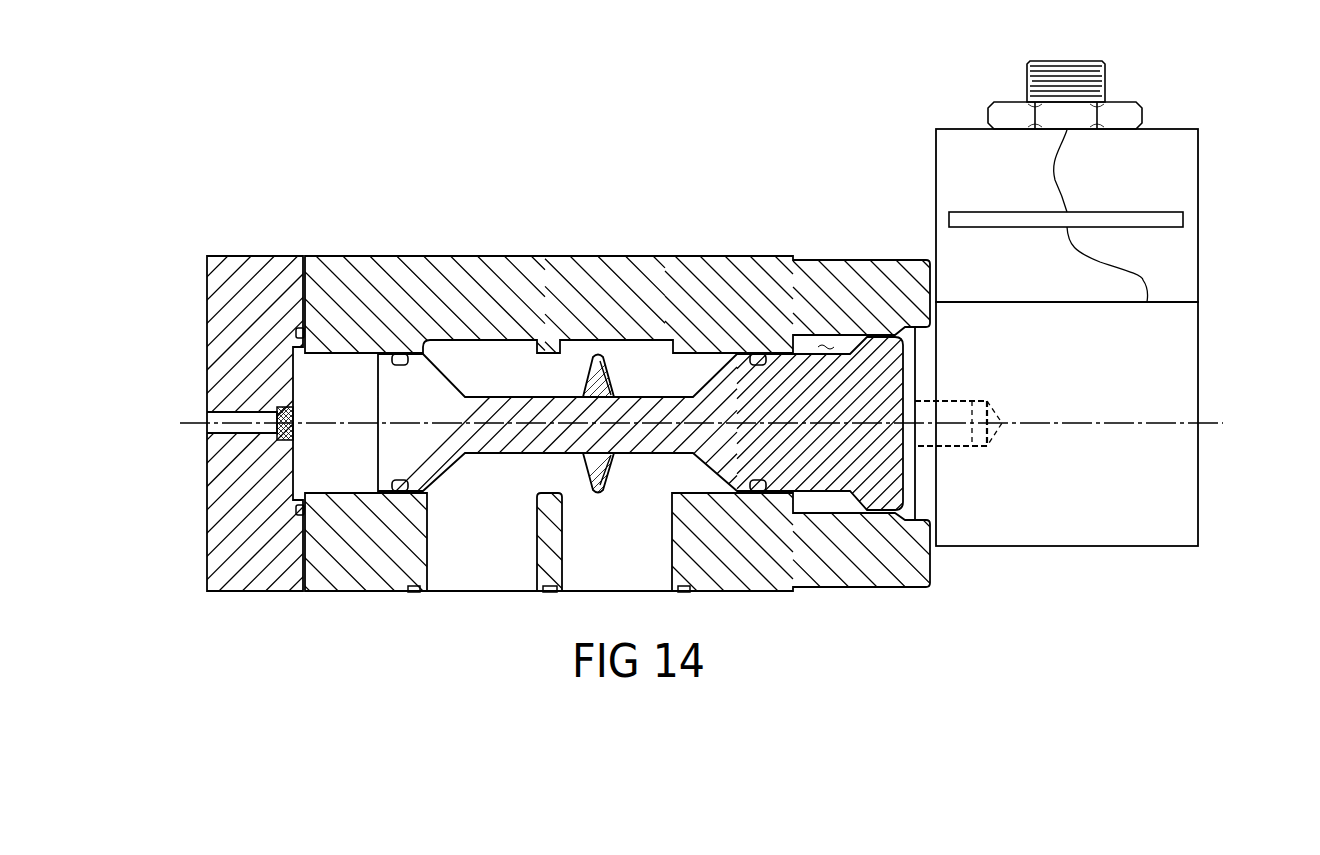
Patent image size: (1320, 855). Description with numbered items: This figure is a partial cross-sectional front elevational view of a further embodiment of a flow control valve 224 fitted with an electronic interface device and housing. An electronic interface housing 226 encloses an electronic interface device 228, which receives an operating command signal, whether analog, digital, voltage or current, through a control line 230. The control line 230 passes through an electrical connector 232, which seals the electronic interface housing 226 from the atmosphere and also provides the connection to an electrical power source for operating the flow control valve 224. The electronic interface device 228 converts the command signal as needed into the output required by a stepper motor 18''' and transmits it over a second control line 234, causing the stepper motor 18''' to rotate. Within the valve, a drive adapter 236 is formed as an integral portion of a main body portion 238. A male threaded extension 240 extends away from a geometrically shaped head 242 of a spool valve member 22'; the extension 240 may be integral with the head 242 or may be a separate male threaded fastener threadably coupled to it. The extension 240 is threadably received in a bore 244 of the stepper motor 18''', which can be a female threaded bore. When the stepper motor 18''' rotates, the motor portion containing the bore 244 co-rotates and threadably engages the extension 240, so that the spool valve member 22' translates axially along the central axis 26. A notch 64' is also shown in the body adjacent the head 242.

The flow control valve 224 is at (790, 98).
The electronic interface housing 226 is at (1172, 143).
The electronic interface device 228 is at (1177, 217).
The control line 230 is at (1053, 177).
The electrical connector 232 is at (1127, 108).
The second control line 234 is at (1143, 280).
The drive adapter 236 is at (897, 587).
The main body portion 238 is at (560, 278).
The male threaded extension 240 is at (908, 447).
The geometrically shaped head 242 is at (882, 507).
The bore 244 is at (982, 447).
The central axis 26 is at (1203, 423).
The notch 64' is at (850, 282).
The spool valve member 22' is at (640, 423).
The stepper motor 18''' is at (1067, 452).